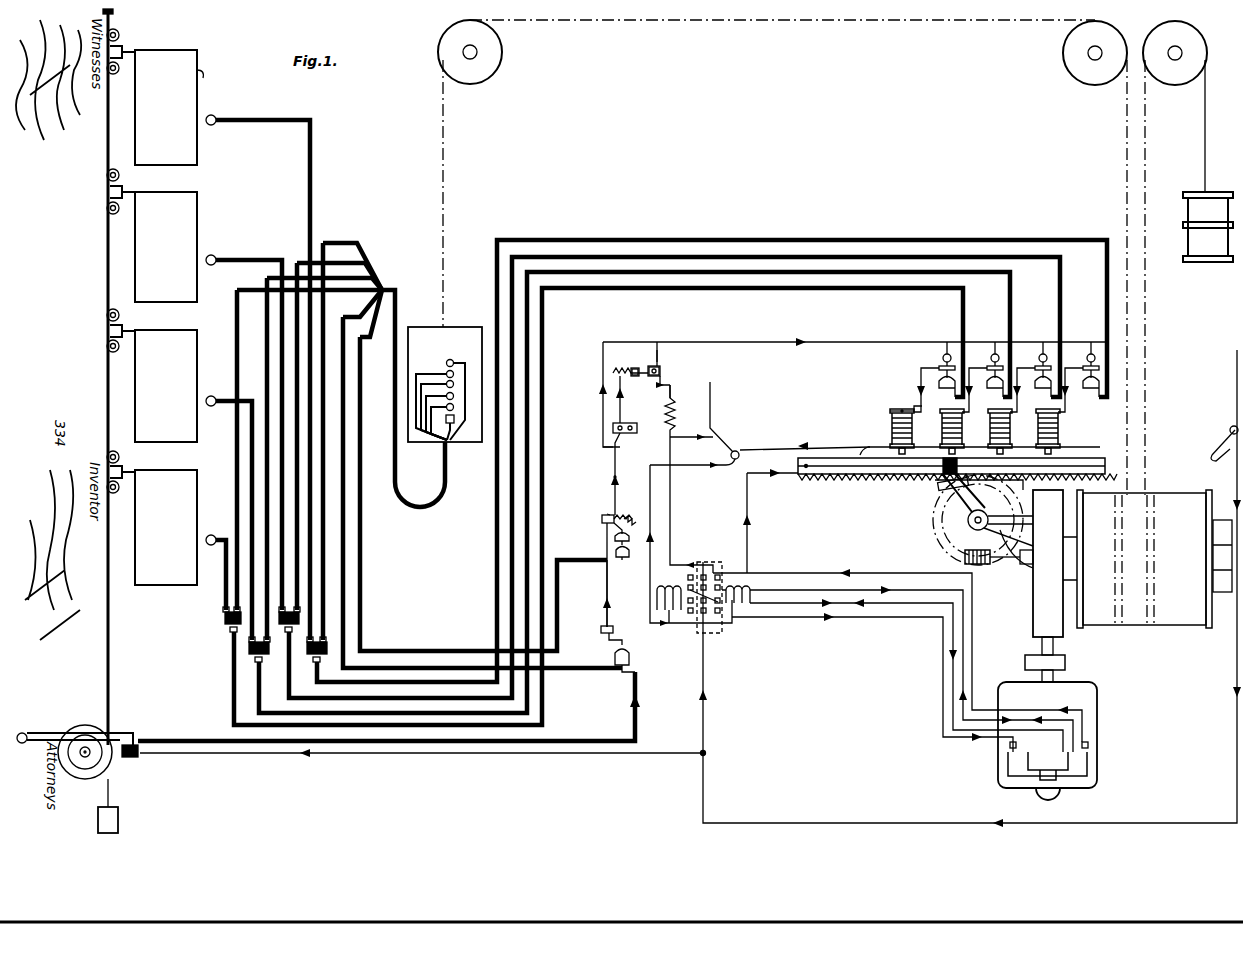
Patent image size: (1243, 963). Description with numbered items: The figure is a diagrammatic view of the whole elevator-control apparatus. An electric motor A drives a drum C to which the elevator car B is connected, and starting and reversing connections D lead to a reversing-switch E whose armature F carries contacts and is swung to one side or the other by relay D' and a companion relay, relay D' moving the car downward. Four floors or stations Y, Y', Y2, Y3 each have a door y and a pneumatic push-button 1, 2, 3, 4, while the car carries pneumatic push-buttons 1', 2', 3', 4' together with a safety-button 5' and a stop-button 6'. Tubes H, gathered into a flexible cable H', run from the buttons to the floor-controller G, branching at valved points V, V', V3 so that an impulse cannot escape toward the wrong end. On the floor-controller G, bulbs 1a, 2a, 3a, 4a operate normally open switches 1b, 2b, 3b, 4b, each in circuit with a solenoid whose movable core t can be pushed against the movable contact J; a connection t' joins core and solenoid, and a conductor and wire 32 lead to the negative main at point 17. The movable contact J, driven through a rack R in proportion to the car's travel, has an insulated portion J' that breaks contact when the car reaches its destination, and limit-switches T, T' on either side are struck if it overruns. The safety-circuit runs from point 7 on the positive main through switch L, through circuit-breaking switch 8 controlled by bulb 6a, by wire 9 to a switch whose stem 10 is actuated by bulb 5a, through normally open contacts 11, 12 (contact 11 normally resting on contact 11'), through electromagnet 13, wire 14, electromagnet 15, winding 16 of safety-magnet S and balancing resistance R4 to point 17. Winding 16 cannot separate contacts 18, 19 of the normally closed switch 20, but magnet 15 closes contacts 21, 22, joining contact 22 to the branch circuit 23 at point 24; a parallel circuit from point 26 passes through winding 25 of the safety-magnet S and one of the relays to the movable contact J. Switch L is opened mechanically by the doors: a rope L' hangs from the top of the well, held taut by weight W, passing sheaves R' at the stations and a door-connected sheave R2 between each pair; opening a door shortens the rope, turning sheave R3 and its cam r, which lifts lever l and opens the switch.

The pneumatic push-button 1 is at (216, 563).
The pneumatic push-button 2 is at (229, 508).
The pneumatic push-button 3 is at (244, 423).
The pneumatic push-button 4 is at (258, 367).
The car push-button 1' is at (464, 419).
The car push-button 2' is at (462, 411).
The car push-button 3' is at (760, 416).
The car push-button 4' is at (457, 396).
The safety-button 5' is at (456, 390).
The stop-button 6' is at (462, 439).
The pneumatic bulb 1a is at (940, 390).
The normally open switch 1b is at (941, 360).
The pneumatic bulb 2a is at (988, 390).
The normally open switch 2b is at (989, 360).
The pneumatic bulb 3a is at (1036, 390).
The normally open switch 3b is at (1037, 360).
The pneumatic bulb 4a is at (1084, 390).
The normally open switch 4b is at (1085, 360).
The pneumatic bulb 5a is at (617, 551).
The pneumatic bulb 6a is at (615, 655).
The point on positive main 7 is at (690, 577).
The circuit-breaking switch 8 is at (616, 634).
The wire 9 is at (607, 590).
The conductive stem 10 is at (614, 539).
The contact 11 is at (600, 519).
The contact 11' is at (598, 503).
The contact 12 is at (622, 514).
The electromagnet 13 is at (637, 525).
The wire 14 is at (616, 477).
The electromagnet 15 is at (616, 395).
The winding of safety-magnet 16 is at (610, 389).
The point on negative main 17 is at (691, 448).
The contact 18 is at (672, 390).
The contact 19 is at (660, 368).
The normally closed switch 20 is at (670, 378).
The contact 21 is at (626, 422).
The contact 22 is at (626, 474).
The branch circuit 23 is at (603, 375).
The connection point 24 is at (613, 447).
The winding of safety-magnet 25 is at (637, 360).
The starting point 26 is at (657, 358).
The motor A is at (1047, 718).
The elevator car B is at (754, 382).
The drum C is at (1132, 570).
The starting and reversing connections D is at (897, 660).
The relay D' is at (667, 594).
The reversing-switch E is at (704, 588).
The armature F is at (710, 633).
The floor-controller G is at (879, 409).
The tubes H is at (762, 436).
The cable H' is at (413, 408).
The movable contact J is at (905, 486).
The insulated portion J' is at (941, 500).
The switch L is at (389, 706).
The rope L' is at (96, 377).
The lever l is at (135, 735).
The rack R is at (957, 482).
The sheaves R' is at (88, 261).
The sheave R2 is at (112, 193).
The sheave R3 is at (110, 764).
The balancing resistance R4 is at (676, 412).
The cam r is at (90, 770).
The safety-magnet S is at (854, 385).
The limit-switch T is at (702, 417).
The limit-switch T' is at (1216, 442).
The movable core t is at (899, 403).
The connection t' is at (909, 395).
The branching point V is at (584, 506).
The branching point V' is at (649, 485).
The branching point V3 is at (701, 461).
The weight W is at (118, 820).
The floor Y is at (155, 527).
The floor Y' is at (155, 386).
The floor Y2 is at (155, 247).
The floor Y3 is at (155, 107).
The door y is at (181, 95).
The wire 32 is at (805, 439).